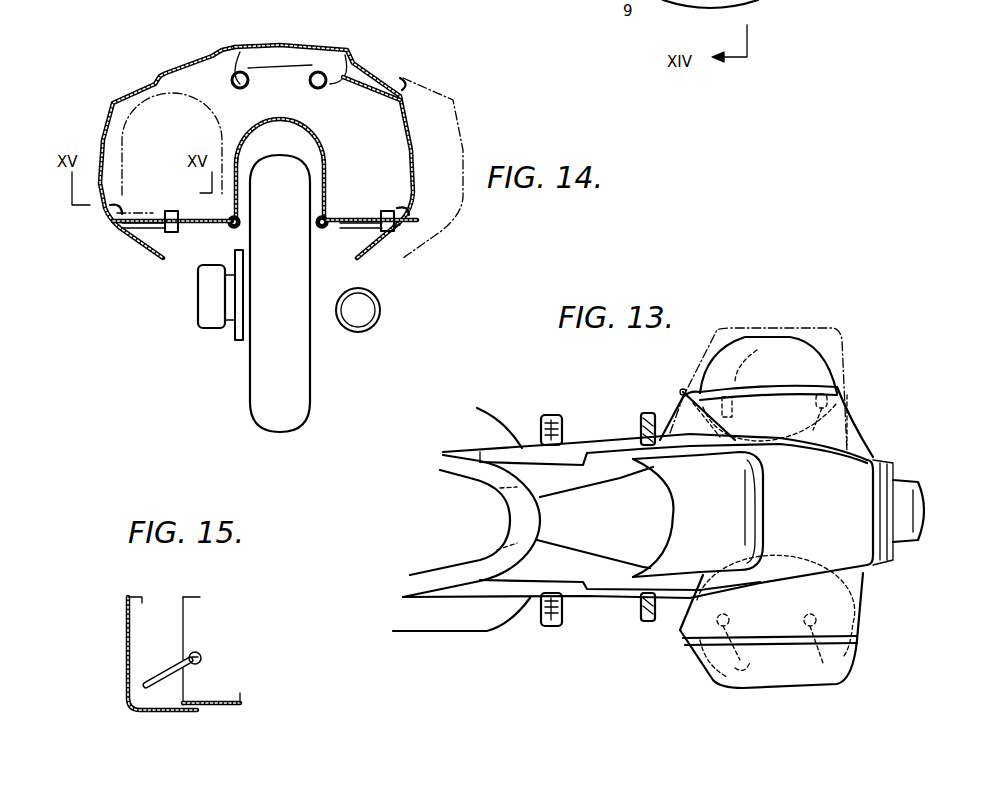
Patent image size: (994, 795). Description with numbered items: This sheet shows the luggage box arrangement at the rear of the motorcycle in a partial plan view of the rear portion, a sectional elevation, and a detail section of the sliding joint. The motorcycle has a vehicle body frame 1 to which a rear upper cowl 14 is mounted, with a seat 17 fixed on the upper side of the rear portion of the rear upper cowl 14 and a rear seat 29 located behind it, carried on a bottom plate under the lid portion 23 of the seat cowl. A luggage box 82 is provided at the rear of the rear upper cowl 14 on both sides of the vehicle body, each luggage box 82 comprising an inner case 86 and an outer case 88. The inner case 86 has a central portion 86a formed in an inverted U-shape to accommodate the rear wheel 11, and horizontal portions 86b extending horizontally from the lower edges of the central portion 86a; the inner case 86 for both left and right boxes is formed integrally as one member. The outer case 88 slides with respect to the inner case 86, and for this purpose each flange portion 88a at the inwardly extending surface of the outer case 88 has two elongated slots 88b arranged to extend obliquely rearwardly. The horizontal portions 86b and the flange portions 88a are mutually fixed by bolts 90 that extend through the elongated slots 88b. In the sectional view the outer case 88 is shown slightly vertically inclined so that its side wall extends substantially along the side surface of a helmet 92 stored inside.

In FIG. 13, the vehicle body frame 1 is at (486, 657).
In FIG. 14, the rear wheel 11 is at (300, 404).
In FIG. 13, the rear upper cowl 14 is at (570, 452).
In FIG. 13, the seat 17 is at (617, 589).
In FIG. 14, the lid portion 23 is at (290, 46).
In FIG. 13, the lid portion 23 is at (843, 488).
In FIG. 13, the rear seat 29 is at (707, 600).
In FIG. 14, the luggage box 82 is at (352, 98).
In FIG. 13, the luggage box 82 is at (702, 677).
In FIG. 14, the inner case 86 is at (287, 118).
In FIG. 15, the inner case 86 is at (220, 708).
In FIG. 13, the inner case 86 is at (806, 688).
In FIG. 14, the central portion 86a is at (318, 133).
In FIG. 14, the horizontal portions 86b is at (190, 214).
In FIG. 15, the horizontal portions 86b is at (200, 617).
In FIG. 14, the outer case 88 is at (113, 226).
In FIG. 15, the outer case 88 is at (127, 662).
In FIG. 13, the outer case 88 is at (782, 382).
In FIG. 14, the flange portions 88a is at (107, 212).
In FIG. 15, the flange portions 88a is at (140, 617).
In FIG. 14, the elongated slots 88b is at (133, 243).
In FIG. 15, the elongated slots 88b is at (167, 670).
In FIG. 13, the elongated slots 88b is at (683, 390).
In FIG. 14, the bolts 90 is at (170, 211).
In FIG. 15, the bolts 90 is at (203, 655).
In FIG. 14, the helmet 92 is at (145, 115).
In FIG. 13, the helmet 92 is at (773, 330).